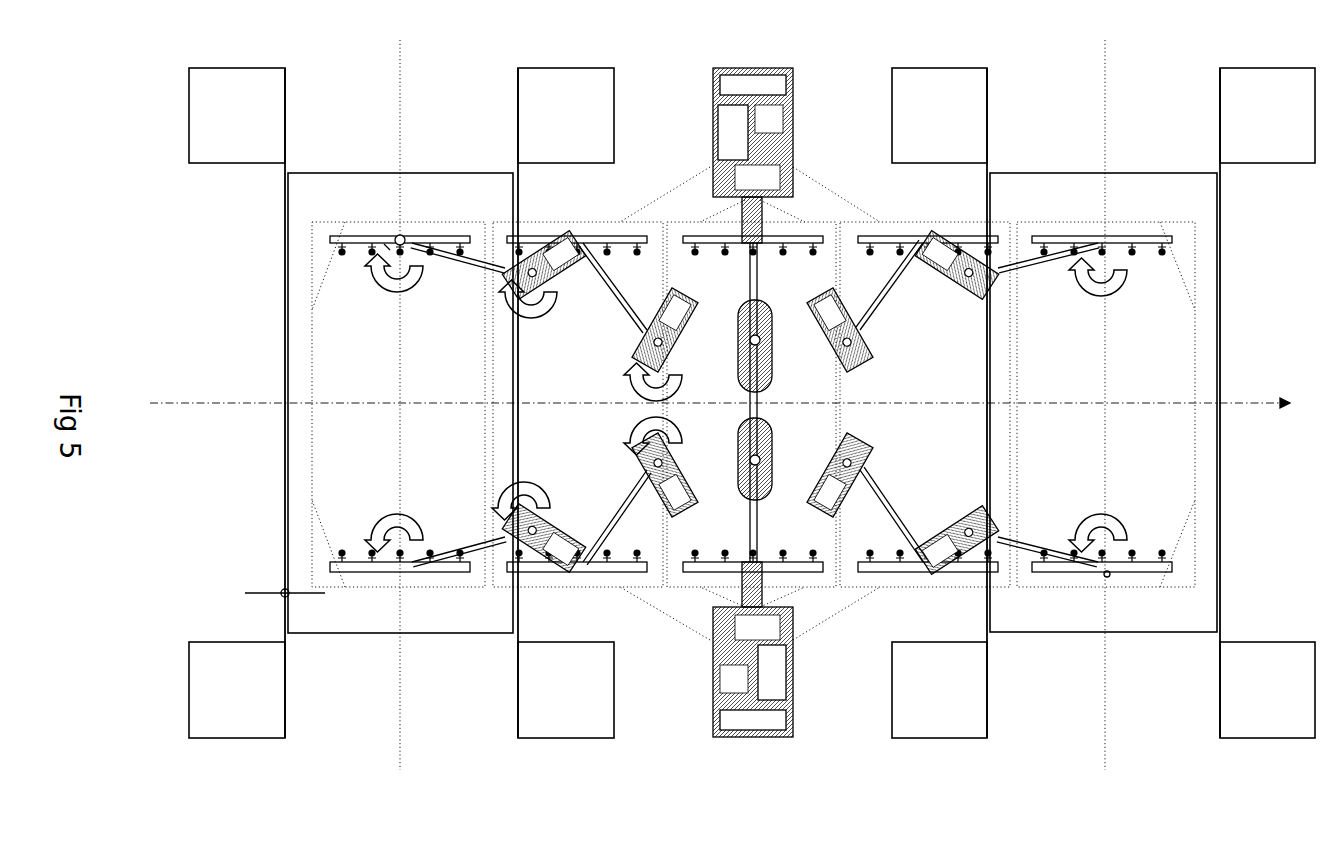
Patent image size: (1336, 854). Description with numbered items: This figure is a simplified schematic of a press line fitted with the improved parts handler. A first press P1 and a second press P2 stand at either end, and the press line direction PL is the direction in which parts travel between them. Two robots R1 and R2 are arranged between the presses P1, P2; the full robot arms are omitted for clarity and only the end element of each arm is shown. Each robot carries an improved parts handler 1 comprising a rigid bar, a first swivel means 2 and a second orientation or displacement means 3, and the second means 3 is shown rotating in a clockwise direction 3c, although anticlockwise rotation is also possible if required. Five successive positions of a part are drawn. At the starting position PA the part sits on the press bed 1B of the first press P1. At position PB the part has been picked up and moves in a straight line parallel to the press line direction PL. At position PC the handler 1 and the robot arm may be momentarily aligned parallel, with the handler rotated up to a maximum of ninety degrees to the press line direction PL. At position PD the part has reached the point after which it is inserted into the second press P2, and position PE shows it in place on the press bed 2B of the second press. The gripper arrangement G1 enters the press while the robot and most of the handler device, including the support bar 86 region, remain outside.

The improved parts handler 1 is at (470, 265).
The press bed of first press 1B is at (312, 204).
The first swivel means 2 is at (507, 287).
The press bed of second press 2B is at (1203, 203).
The second orientation or displacement means 3 is at (387, 247).
The clockwise direction 3c is at (377, 287).
The support bar 86 is at (1172, 572).
The gripper arrangement G1 is at (327, 245).
The first press P1 is at (401, 405).
The second press P2 is at (1103, 405).
The starting position PA is at (378, 588).
The second position PB is at (515, 572).
The third position PC is at (683, 565).
The fourth position PD is at (1005, 588).
The fifth position PE is at (1162, 588).
The press line direction PL is at (730, 417).
The first robot R1 is at (1265, 367).
The second robot R2 is at (783, 570).